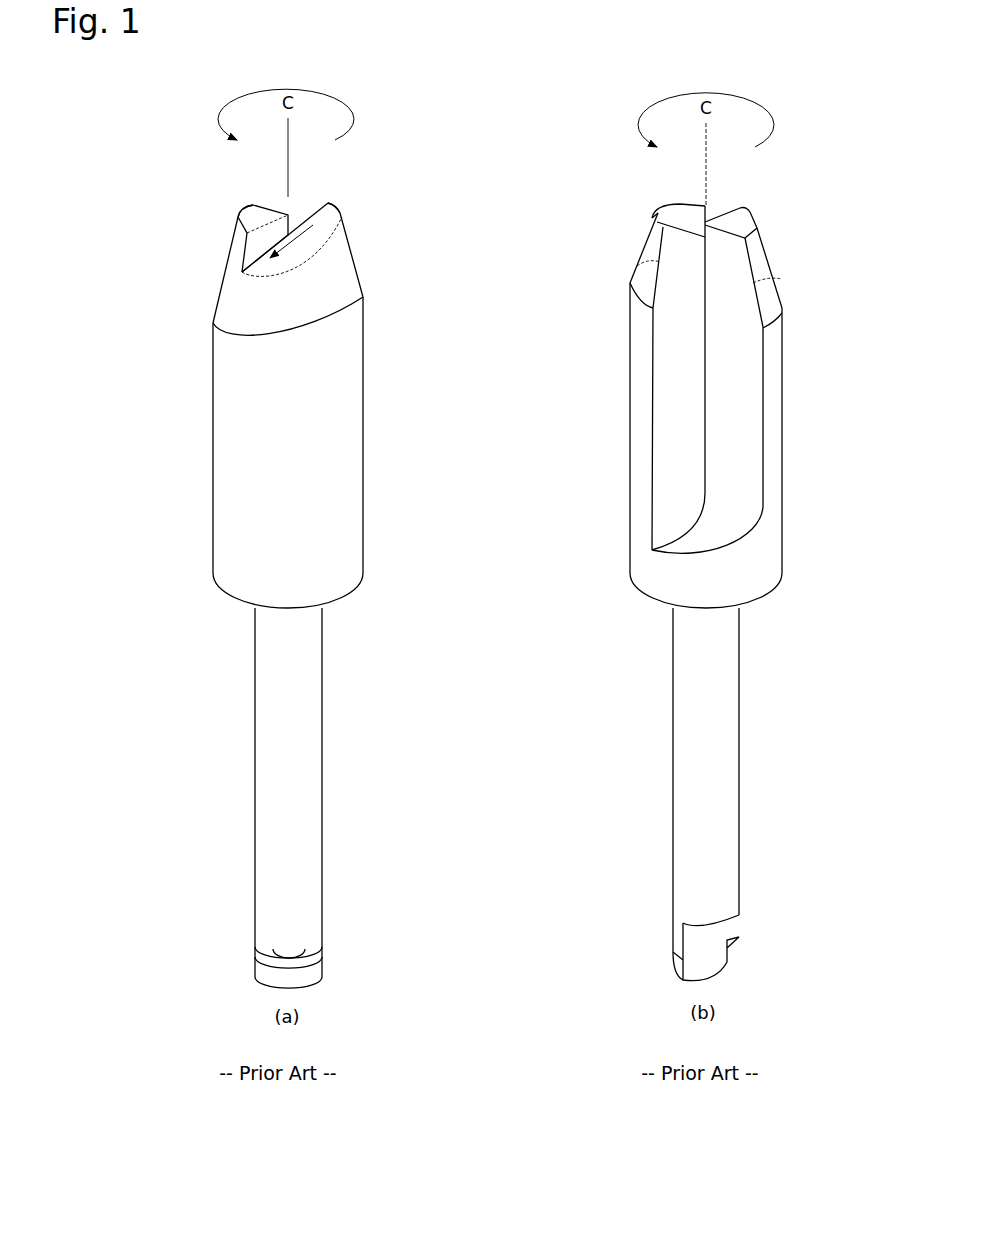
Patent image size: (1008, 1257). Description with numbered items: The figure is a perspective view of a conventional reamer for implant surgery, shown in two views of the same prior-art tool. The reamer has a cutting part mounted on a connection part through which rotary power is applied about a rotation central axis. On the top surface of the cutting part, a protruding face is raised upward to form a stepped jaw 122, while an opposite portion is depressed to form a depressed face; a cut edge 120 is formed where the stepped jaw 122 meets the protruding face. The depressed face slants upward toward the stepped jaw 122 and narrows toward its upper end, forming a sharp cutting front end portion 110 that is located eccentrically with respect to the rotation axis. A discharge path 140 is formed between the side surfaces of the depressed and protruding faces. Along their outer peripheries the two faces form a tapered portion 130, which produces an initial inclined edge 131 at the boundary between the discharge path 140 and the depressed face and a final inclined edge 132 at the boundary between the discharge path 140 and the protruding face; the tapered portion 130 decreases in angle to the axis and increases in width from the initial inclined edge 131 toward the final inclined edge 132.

The cutting front end portion 110 is at (330, 200).
The cut edge 120 is at (270, 224).
The stepped jaw 122 is at (292, 212).
The tapered portion 130 is at (222, 292).
The initial inclined edge 131 is at (637, 266).
The final inclined edge 132 is at (757, 284).
The discharge path 140 is at (733, 527).